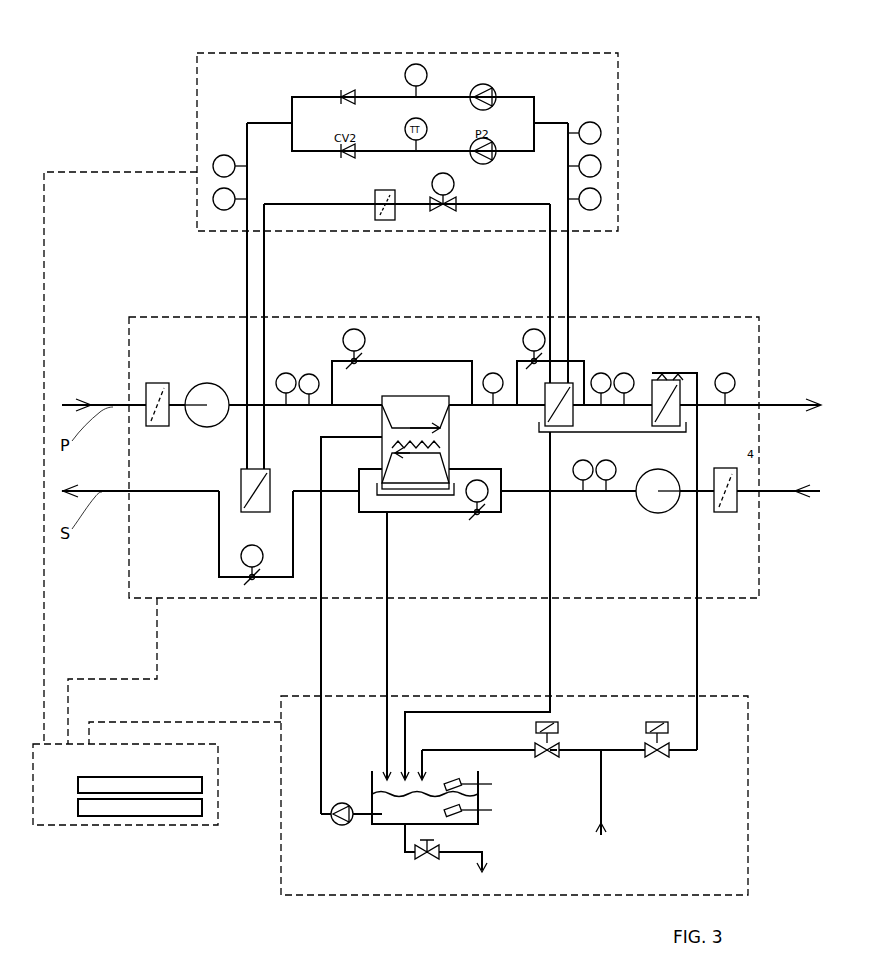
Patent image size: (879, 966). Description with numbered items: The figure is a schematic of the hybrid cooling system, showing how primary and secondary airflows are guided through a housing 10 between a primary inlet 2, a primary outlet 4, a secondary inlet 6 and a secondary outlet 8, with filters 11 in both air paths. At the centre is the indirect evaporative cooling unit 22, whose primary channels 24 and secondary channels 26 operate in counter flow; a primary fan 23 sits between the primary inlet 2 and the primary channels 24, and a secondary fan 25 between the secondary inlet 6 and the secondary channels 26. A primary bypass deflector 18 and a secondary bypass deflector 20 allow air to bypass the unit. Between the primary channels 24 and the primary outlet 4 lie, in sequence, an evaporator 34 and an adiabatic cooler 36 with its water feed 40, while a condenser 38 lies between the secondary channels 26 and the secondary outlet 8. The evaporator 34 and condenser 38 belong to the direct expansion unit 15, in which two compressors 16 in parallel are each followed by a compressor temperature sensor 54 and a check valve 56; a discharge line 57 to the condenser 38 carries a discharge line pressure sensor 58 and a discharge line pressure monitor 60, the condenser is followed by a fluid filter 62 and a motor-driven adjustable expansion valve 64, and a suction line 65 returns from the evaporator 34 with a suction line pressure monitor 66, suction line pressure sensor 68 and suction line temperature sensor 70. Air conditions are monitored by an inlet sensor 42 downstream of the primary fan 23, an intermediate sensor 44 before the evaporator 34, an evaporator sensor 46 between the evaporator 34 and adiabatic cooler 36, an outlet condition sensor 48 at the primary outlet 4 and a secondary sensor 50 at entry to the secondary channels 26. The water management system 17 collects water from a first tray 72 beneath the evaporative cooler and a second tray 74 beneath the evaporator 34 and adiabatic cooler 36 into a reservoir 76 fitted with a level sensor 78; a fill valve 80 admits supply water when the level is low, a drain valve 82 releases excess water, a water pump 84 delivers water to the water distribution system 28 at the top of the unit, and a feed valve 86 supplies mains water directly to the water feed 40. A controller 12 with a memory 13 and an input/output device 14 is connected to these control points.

The primary inlet 2 is at (62, 406).
The primary outlet 4 is at (818, 411).
The secondary inlet 6 is at (818, 494).
The secondary outlet 8 is at (62, 492).
The housing 10 is at (759, 336).
The filters 11 is at (146, 396).
The controller 12 is at (112, 814).
The memory 13 is at (88, 817).
The input/output device 14 is at (78, 785).
The direct expansion (DX) unit 15 is at (618, 92).
The compressors 16 is at (495, 88).
The water management system 17 is at (748, 760).
The primary bypass deflector 18 is at (349, 358).
The secondary bypass deflector 20 is at (480, 514).
The indirect evaporative cooling unit 22 is at (418, 462).
The primary fan 23 is at (192, 386).
The primary channels 24 is at (423, 424).
The secondary fan 25 is at (653, 512).
The secondary channels 26 is at (426, 458).
The water distribution system 28 is at (395, 444).
The evaporator 34 is at (557, 382).
The adiabatic cooler 36 is at (702, 519).
The condenser 38 is at (241, 498).
The water feed 40 is at (682, 373).
The inlet sensor 42 is at (290, 373).
The intermediate sensor 44 is at (493, 373).
The evaporator sensor 46 is at (612, 373).
The outlet condition sensor 48 is at (735, 383).
The secondary sensor 50 is at (596, 492).
The compressor temperature sensor 54 is at (430, 63).
The check valve 56 is at (350, 92).
The discharge line 57 is at (247, 128).
The discharge line pressure sensor 58 is at (213, 166).
The discharge line pressure monitor 60 is at (213, 206).
The fluid filter 62 is at (385, 221).
The motor-driven adjustable expansion valve 64 is at (452, 208).
The suction line 65 is at (570, 256).
The suction line pressure monitor 66 is at (603, 203).
The suction line pressure sensor 68 is at (601, 166).
The suction line temperature sensor 70 is at (602, 135).
The first tray 72 is at (405, 495).
The second tray 74 is at (660, 434).
The reservoir 76 is at (372, 823).
The level sensor 78 is at (492, 811).
The fill valve 80 is at (552, 745).
The drain valve 82 is at (432, 860).
The water pump 84 is at (336, 819).
The feed valve 86 is at (668, 747).